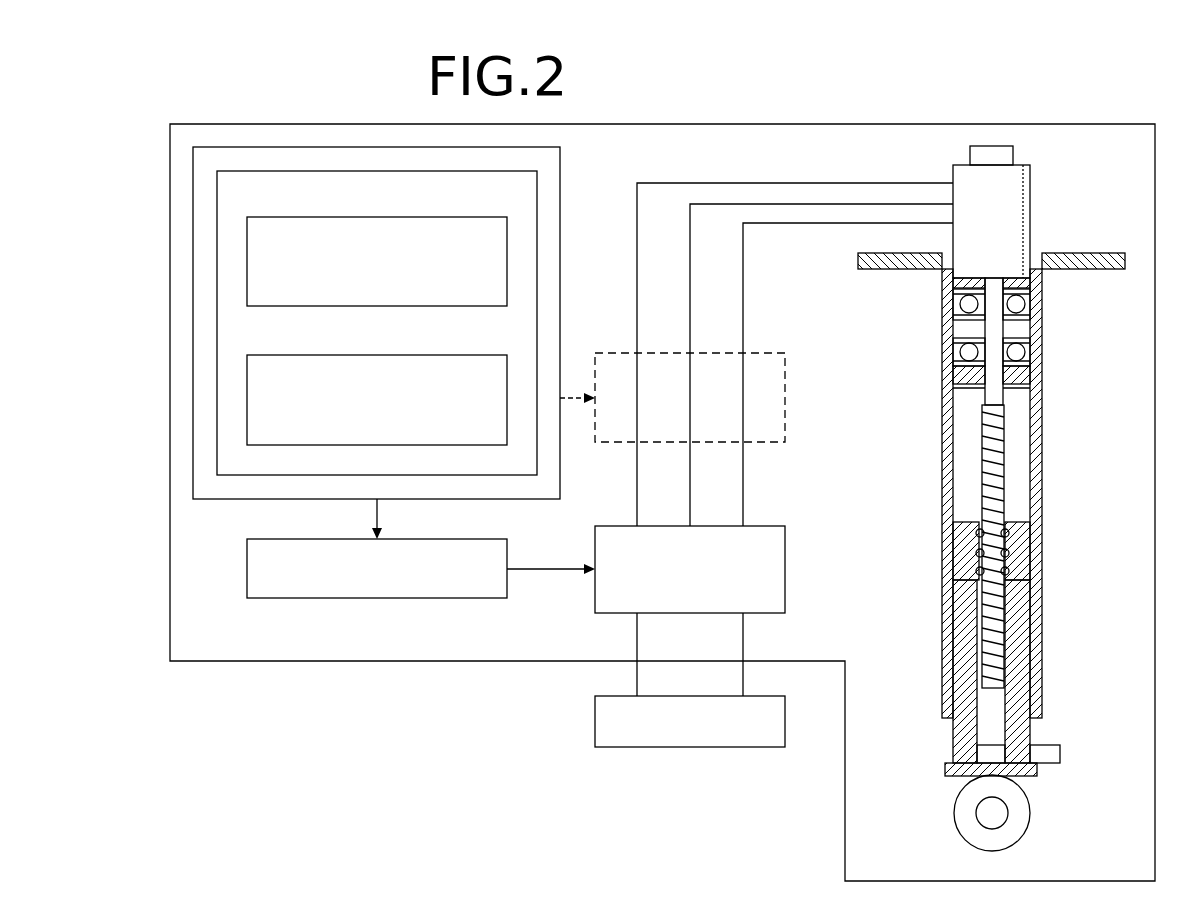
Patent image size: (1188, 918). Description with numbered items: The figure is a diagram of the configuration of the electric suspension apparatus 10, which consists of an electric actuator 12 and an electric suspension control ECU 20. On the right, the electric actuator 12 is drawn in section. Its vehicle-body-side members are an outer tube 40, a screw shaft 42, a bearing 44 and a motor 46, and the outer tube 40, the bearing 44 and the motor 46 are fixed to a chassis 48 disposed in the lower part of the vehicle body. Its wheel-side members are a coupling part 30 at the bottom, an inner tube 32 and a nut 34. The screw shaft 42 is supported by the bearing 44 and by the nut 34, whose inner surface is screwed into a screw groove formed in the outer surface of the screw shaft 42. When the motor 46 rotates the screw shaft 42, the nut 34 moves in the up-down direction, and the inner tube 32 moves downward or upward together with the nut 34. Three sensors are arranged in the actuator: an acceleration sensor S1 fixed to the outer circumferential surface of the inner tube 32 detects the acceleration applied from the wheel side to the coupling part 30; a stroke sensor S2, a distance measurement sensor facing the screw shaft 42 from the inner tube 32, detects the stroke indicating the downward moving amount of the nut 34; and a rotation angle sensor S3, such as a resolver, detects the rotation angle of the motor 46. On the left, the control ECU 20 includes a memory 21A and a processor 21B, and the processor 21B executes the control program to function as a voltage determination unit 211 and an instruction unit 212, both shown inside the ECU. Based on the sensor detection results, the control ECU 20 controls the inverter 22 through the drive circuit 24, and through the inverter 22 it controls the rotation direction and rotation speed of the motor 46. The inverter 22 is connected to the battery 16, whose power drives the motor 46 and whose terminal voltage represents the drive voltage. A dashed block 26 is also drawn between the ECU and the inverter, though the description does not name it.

The electric suspension apparatus 10 is at (666, 124).
The electric actuator 12 is at (1075, 531).
The battery 16 is at (595, 712).
The electric suspension control ECU 20 is at (311, 319).
The memory 21A is at (193, 170).
The processor 21B is at (217, 247).
The voltage determination unit 211 is at (357, 217).
The instruction unit 212 is at (357, 355).
The inverter 22 is at (770, 526).
The drive circuit 24 is at (450, 539).
The optional unit 26 is at (778, 353).
The coupling part 30 is at (1018, 815).
The inner tube 32 is at (955, 755).
The nut 34 is at (958, 545).
The outer tube 40 is at (1042, 650).
The screw shaft 42 is at (1006, 635).
The bearing 44 is at (1030, 300).
The motor 46 is at (1030, 170).
The chassis 48 is at (1098, 253).
The acceleration sensor S1 is at (1060, 752).
The stroke sensor S2 is at (990, 745).
The rotation angle sensor S3 is at (985, 155).